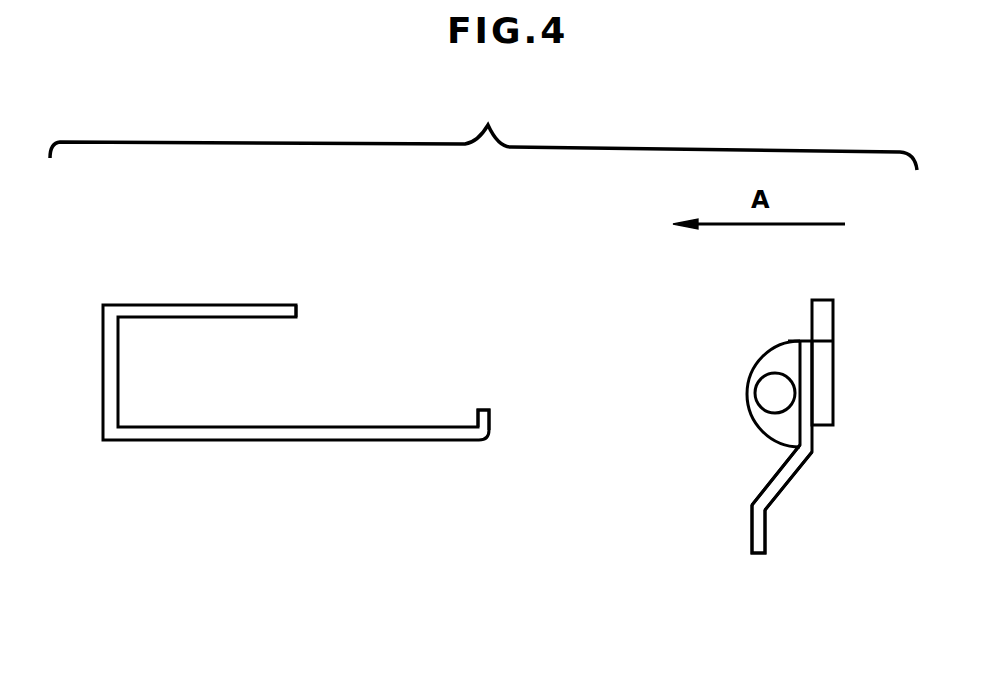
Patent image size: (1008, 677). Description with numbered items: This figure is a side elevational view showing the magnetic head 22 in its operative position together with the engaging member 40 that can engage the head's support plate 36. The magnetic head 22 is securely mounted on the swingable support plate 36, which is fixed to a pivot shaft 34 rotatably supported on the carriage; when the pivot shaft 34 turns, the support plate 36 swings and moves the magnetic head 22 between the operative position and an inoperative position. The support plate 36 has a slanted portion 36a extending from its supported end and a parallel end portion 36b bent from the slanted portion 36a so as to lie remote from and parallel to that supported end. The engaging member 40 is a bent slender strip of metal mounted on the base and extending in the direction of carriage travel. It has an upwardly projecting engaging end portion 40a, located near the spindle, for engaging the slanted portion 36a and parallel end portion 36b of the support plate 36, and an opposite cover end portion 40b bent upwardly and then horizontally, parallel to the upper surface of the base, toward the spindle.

The magnetic head 22 is at (833, 300).
The pivot shaft 34 is at (763, 407).
The support plate 36 is at (812, 379).
The slanted portion 36a is at (795, 474).
The parallel end portion 36b is at (767, 553).
The engaging member 40 is at (294, 446).
The engaging end portion 40a is at (490, 419).
The cover end portion 40b is at (296, 305).